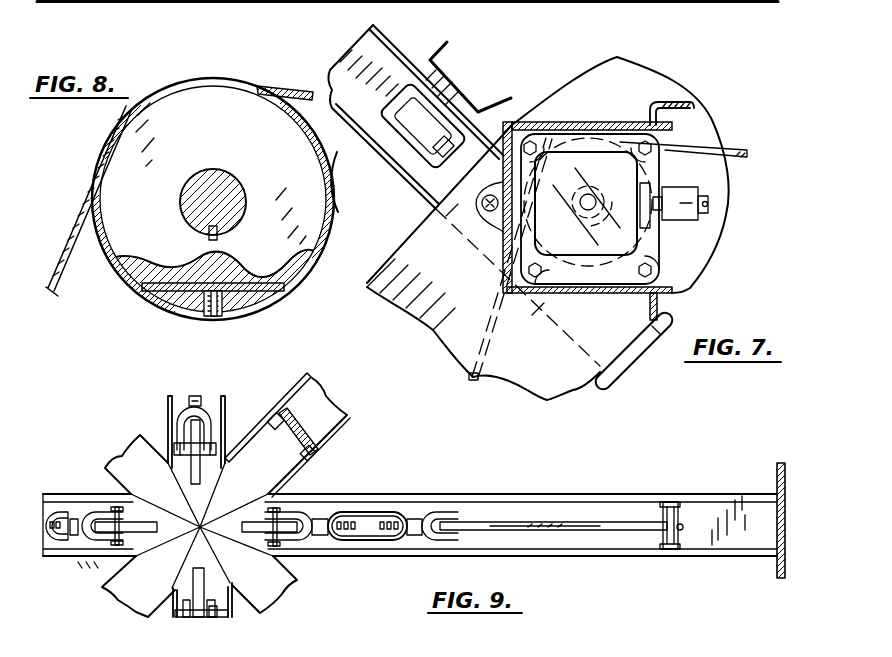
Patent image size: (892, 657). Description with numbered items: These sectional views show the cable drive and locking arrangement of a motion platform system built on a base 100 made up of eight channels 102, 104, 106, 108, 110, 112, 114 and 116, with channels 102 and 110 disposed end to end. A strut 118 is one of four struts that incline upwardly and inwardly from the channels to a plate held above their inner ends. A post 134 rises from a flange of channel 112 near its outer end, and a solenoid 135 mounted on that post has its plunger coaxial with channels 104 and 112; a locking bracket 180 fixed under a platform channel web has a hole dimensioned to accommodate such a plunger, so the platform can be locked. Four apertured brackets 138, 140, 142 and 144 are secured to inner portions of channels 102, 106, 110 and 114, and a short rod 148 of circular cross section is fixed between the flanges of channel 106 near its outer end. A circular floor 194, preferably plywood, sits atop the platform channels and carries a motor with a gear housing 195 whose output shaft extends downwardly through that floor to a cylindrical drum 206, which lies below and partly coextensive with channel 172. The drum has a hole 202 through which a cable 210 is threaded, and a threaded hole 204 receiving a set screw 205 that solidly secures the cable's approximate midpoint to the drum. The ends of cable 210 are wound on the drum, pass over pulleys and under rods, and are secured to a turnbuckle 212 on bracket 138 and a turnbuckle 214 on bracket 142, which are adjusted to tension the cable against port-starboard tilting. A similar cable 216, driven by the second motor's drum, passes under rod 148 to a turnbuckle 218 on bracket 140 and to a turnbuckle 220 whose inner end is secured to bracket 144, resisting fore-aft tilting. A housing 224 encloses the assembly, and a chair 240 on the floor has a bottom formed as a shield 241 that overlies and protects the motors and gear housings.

In FIG. 7, the base 100 is at (410, 190).
In FIG. 9, the base 100 is at (332, 483).
In FIG. 9, the channel 102 is at (178, 392).
In FIG. 9, the channel 104 is at (325, 400).
In FIG. 9, the channel 106 is at (485, 494).
In FIG. 9, the channel 108 is at (275, 600).
In FIG. 9, the channel 110 is at (175, 618).
In FIG. 7, the channel 112 is at (410, 52).
In FIG. 9, the channel 112 is at (118, 588).
In FIG. 9, the channel 114 is at (70, 495).
In FIG. 9, the channel 116 is at (130, 457).
In FIG. 9, the strut 118 is at (300, 400).
In FIG. 7, the post 134 is at (460, 100).
In FIG. 7, the solenoid 135 is at (406, 140).
In FIG. 9, the bracket 138 is at (198, 427).
In FIG. 9, the bracket 140 is at (298, 535).
In FIG. 9, the bracket 142 is at (207, 581).
In FIG. 9, the bracket 144 is at (108, 552).
In FIG. 9, the short rod 148 is at (664, 512).
In FIG. 7, the channel 172 is at (634, 364).
In FIG. 7, the locking bracket 180 is at (411, 287).
In FIG. 7, the circular floor 194 is at (720, 268).
In FIG. 7, the gear housing 195 is at (590, 160).
In FIG. 8, the hole 202 is at (172, 300).
In FIG. 8, the threaded hole 204 is at (228, 312).
In FIG. 8, the set screw 205 is at (206, 320).
In FIG. 8, the cylindrical drum 206 is at (107, 182).
In FIG. 7, the cylindrical drum 206 is at (563, 112).
In FIG. 8, the cable 210 is at (283, 86).
In FIG. 7, the cable 210 is at (738, 150).
In FIG. 9, the turnbuckle 212 is at (206, 398).
In FIG. 9, the turnbuckle 214 is at (220, 614).
In FIG. 9, the cable 216 is at (680, 530).
In FIG. 9, the turnbuckle 218 is at (375, 506).
In FIG. 9, the turnbuckle 220 is at (76, 505).
In FIG. 9, the housing 224 is at (777, 468).
In FIG. 7, the chair 240 is at (668, 106).
In FIG. 7, the shield 241 is at (547, 313).